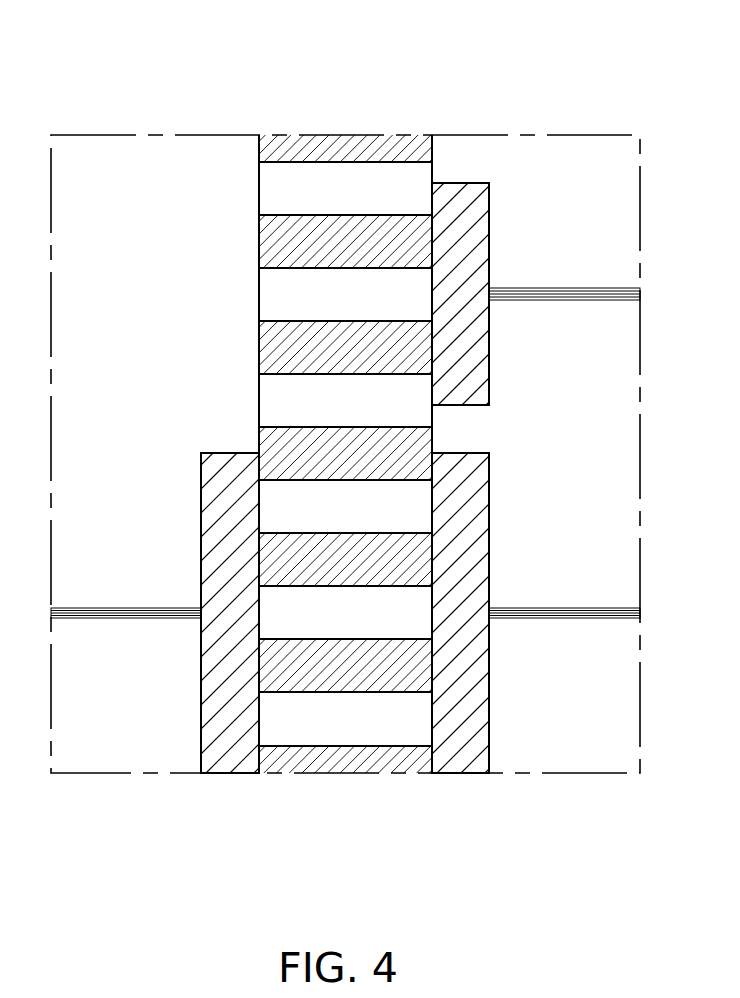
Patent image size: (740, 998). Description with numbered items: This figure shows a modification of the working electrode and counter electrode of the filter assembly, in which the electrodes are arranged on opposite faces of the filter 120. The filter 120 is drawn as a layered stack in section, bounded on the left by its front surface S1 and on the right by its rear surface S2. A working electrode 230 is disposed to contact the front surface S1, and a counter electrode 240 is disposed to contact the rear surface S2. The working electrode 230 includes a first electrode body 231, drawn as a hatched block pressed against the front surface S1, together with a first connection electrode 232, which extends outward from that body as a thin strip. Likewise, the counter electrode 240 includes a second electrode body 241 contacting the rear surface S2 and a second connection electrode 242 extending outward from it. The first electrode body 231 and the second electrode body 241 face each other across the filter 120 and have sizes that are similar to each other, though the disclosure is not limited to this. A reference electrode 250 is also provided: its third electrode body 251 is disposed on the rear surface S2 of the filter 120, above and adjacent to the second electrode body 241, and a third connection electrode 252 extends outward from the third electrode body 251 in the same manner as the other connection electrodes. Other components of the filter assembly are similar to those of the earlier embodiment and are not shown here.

The filter 120 is at (352, 762).
The front surface S1 is at (259, 136).
The rear surface S2 is at (431, 136).
The working electrode 230 is at (155, 676).
The first electrode body 231 is at (225, 760).
The first connection electrode 232 is at (169, 618).
The counter electrode 240 is at (536, 676).
The second electrode body 241 is at (465, 759).
The second connection electrode 242 is at (520, 618).
The reference electrode 250 is at (536, 208).
The third electrode body 251 is at (461, 198).
The third connection electrode 252 is at (522, 288).